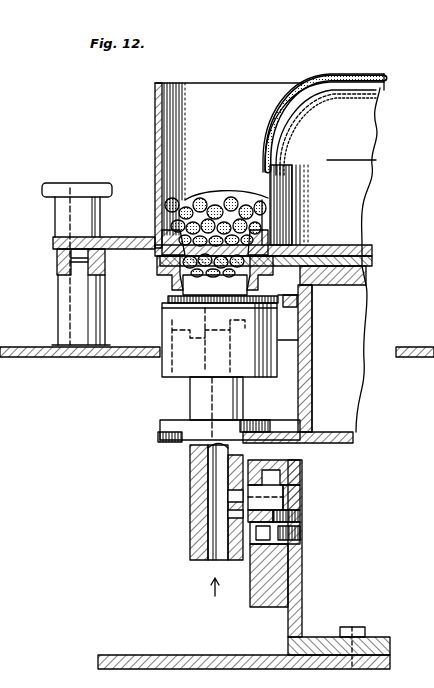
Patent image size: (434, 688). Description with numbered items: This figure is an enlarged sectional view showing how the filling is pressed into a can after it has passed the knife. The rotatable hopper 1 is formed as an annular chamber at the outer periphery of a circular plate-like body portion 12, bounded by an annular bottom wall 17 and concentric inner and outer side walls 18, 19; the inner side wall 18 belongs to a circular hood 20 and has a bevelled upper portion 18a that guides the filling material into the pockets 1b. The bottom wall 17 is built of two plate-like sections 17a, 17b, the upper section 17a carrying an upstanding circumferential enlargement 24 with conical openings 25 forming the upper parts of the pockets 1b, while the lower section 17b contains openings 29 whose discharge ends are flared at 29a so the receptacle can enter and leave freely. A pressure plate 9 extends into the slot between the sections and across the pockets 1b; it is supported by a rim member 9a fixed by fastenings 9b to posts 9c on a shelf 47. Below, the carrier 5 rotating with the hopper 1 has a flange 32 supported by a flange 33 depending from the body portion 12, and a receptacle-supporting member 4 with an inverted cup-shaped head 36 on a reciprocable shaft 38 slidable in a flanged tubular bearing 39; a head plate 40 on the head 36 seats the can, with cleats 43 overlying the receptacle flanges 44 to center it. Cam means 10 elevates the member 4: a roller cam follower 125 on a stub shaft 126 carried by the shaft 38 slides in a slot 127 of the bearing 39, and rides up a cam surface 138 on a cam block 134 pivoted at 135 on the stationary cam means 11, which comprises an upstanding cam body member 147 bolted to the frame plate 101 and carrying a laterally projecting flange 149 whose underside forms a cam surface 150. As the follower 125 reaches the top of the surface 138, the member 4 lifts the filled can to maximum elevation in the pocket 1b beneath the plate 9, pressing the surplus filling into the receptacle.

The hopper 1 is at (312, 80).
The pockets 1b is at (186, 200).
The receptacle-supporting members 4 is at (158, 370).
The carrier 5 is at (158, 444).
The pressure plate 9 is at (205, 222).
The rim member 9a is at (130, 239).
The fastenings 9b is at (78, 180).
The posts 9c is at (57, 263).
The cam means 10 is at (250, 576).
The stationary cam means 11 is at (306, 502).
The circular plate-like body portion 12 is at (354, 276).
The annular bottom wall 17 is at (352, 244).
The upper bottom wall section 17a is at (360, 248).
The lower bottom wall section 17b is at (364, 261).
The inner annular side wall 18 is at (290, 195).
The bevelled upper portion 18a is at (284, 128).
The outer annular side wall 19 is at (155, 148).
The circular hood 20 is at (378, 76).
The upstanding circumferential enlargement 24 is at (268, 232).
The conical openings 25 is at (262, 206).
The openings 29 is at (165, 277).
The flared discharge ends 29a is at (176, 290).
The flange 32 is at (158, 436).
The depending flange 33 is at (306, 372).
The inverted cup-shaped head 36 is at (280, 340).
The reciprocable shaft 38 is at (210, 464).
The flanged tubular bearing 39 is at (190, 403).
The head plate 40 is at (280, 316).
The cleats 43 is at (298, 297).
The receptacle flanges 44 is at (172, 300).
The shelf 47 is at (32, 350).
The frame plate 101 is at (163, 655).
The cam followers 125 is at (232, 514).
The stub shafts 126 is at (234, 498).
The slots 127 is at (234, 486).
The cam block 134 is at (268, 580).
The pivot 135 is at (302, 548).
The cam surface 138 is at (302, 518).
The cam body member 147 is at (302, 598).
The laterally projecting flange 149 is at (266, 462).
The cam surface 150 is at (302, 482).